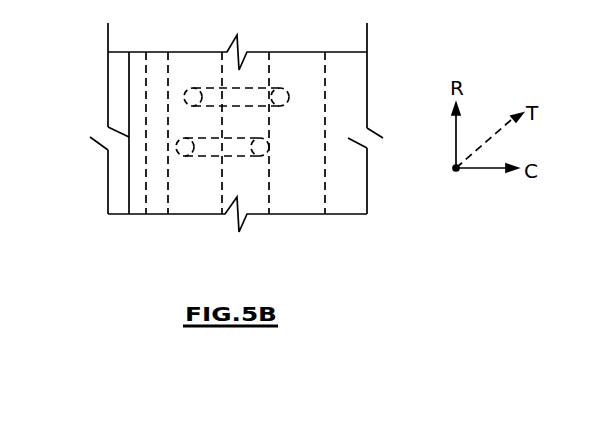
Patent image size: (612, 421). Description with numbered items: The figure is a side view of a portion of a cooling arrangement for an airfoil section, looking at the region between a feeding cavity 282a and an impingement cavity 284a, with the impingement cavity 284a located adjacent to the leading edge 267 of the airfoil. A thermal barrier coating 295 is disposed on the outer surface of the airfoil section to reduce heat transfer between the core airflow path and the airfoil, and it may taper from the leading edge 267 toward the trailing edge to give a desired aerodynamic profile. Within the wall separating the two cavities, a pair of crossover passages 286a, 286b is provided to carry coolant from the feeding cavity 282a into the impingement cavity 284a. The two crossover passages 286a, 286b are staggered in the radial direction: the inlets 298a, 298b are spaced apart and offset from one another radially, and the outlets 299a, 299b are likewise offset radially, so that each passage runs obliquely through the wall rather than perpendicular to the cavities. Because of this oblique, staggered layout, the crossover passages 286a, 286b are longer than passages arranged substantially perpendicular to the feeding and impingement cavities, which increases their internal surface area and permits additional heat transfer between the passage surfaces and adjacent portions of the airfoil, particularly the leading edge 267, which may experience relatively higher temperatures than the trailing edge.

The leading edge 267 is at (146, 130).
The feeding cavity 282a is at (325, 108).
The impingement cavity 284a is at (168, 107).
The crossover passage 286a is at (210, 88).
The crossover passage 286b is at (205, 158).
The thermal barrier coating 295 is at (129, 197).
The inlet 298a is at (283, 88).
The inlet 298b is at (180, 158).
The outlet 299a is at (190, 88).
The outlet 299b is at (259, 158).